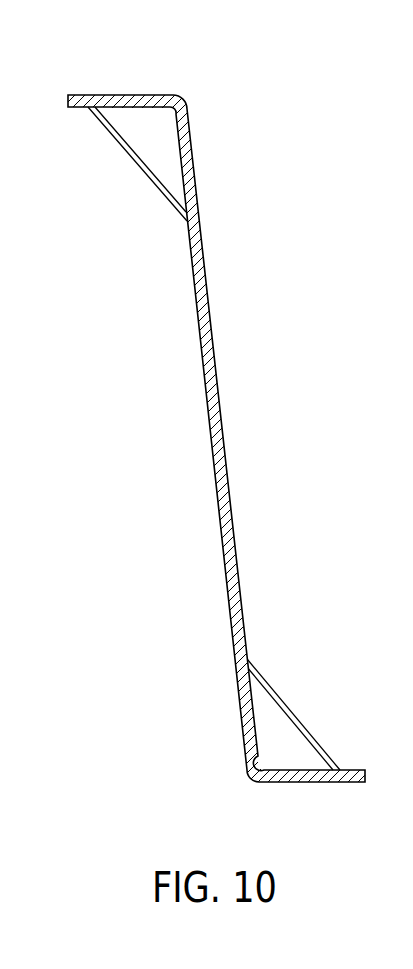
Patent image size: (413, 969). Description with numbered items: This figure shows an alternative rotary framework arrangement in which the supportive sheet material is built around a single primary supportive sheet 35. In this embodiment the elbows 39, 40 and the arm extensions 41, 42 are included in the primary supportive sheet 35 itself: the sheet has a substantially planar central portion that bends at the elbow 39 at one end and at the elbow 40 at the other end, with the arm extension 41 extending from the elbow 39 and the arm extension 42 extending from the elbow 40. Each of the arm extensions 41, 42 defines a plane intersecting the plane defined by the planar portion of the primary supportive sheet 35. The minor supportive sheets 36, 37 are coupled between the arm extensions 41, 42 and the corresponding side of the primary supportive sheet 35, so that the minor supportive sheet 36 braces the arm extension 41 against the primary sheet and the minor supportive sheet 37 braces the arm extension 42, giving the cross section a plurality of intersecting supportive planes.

The primary supportive sheet 35 is at (228, 467).
The minor supportive sheet 36 is at (114, 140).
The minor supportive sheet 37 is at (299, 718).
The elbow portion 39 is at (183, 93).
The elbow portion 40 is at (250, 778).
The arm extension 41 is at (128, 93).
The arm extension 42 is at (310, 783).